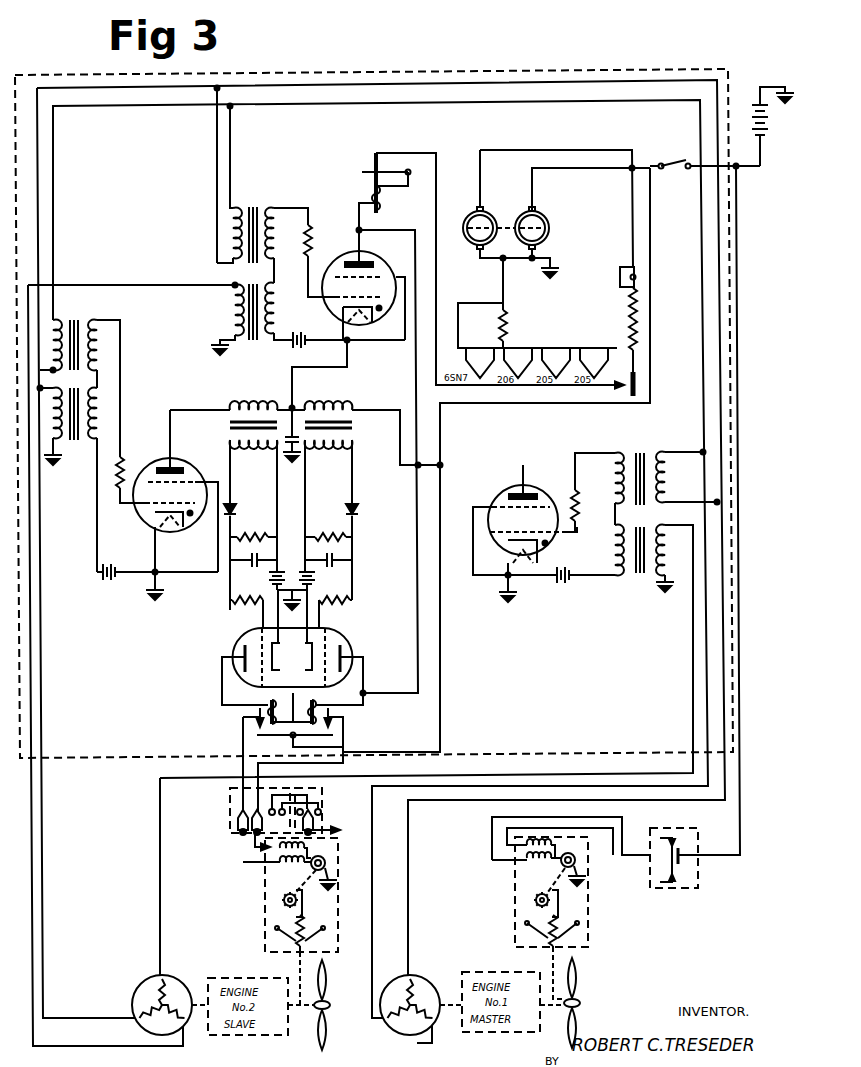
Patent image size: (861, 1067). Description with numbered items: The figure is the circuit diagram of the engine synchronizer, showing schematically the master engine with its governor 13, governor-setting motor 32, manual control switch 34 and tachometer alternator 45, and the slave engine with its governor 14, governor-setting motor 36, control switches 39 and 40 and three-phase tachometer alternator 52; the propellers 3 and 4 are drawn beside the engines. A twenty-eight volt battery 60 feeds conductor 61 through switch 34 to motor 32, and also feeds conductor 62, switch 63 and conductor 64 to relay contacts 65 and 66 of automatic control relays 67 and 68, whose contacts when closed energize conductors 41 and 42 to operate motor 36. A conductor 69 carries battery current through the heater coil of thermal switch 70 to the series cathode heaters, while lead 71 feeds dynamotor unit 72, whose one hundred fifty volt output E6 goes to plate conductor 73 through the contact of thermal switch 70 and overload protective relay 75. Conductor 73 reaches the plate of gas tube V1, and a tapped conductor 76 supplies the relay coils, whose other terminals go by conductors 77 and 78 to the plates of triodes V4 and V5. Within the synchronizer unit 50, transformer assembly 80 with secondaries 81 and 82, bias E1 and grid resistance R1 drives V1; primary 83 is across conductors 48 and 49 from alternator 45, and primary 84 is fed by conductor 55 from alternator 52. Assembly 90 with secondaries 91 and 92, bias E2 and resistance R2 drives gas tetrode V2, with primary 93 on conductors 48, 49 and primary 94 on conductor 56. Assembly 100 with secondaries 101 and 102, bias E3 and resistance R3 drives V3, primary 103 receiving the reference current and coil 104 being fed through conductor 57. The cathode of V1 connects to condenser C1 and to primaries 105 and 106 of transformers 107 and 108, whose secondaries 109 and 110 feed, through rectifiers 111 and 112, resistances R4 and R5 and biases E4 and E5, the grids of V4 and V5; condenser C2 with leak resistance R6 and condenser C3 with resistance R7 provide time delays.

The master engine propeller 3 is at (578, 969).
The slave engine propeller 4 is at (328, 971).
The governor 13 is at (598, 921).
The governor 14 is at (260, 920).
The governor-setting motor 32 is at (578, 857).
The manual control switch 34 is at (700, 880).
The governor-setting motor 36 is at (310, 868).
The control switch 39 is at (230, 820).
The control switch 40 is at (323, 803).
The conductor 41 is at (243, 776).
The conductor 42 is at (345, 765).
The tachometer alternator 45 is at (422, 980).
The conductor 48 is at (429, 108).
The conductor 49 is at (450, 86).
The synchronizer unit 50 is at (464, 64).
The tachometer alternator 52 is at (172, 978).
The conductor 55 is at (35, 916).
The conductor 56 is at (45, 945).
The conductor 57 is at (162, 912).
The battery 60 is at (768, 122).
The conductor 61 is at (741, 190).
The conductor 62 is at (736, 166).
The switch 63 is at (670, 160).
The conductor 64 is at (652, 202).
The relay contacts 65 is at (264, 735).
The relay contacts 66 is at (340, 735).
The automatic control relay 67 is at (250, 716).
The automatic control relay 68 is at (338, 716).
The conductor 69 is at (620, 270).
The thermal switch 70 is at (641, 300).
The lead 71 is at (578, 170).
The dynamotor unit 72 is at (515, 197).
The conductor 73 is at (358, 212).
The overload current protective relay 75 is at (370, 167).
The conductor 76 is at (407, 234).
The conductor 77 is at (220, 680).
The conductor 78 is at (366, 674).
The coupling transformer assembly 80 is at (275, 193).
The transformer secondary coil 81 is at (276, 232).
The transformer secondary coil 82 is at (282, 304).
The primary coil 83 is at (230, 233).
The primary coil 84 is at (233, 308).
The coupling transformer assembly 90 is at (89, 312).
The secondary coil 91 is at (96, 339).
The secondary coil 92 is at (96, 410).
The primary coil 93 is at (49, 246).
The primary coil 94 is at (58, 452).
The coupling transformer assembly 100 is at (562, 478).
The secondary coil 101 is at (612, 470).
The secondary coil 102 is at (612, 553).
The transformer primary coil 103 is at (668, 471).
The transformer coil 104 is at (660, 582).
The primary 105 is at (272, 401).
The primary 106 is at (340, 401).
The transformer 107 is at (265, 379).
The transformer 108 is at (325, 379).
The secondary winding 109 is at (254, 487).
The secondary winding 110 is at (329, 506).
The rectifier 111 is at (235, 509).
The rectifier 112 is at (357, 509).
The gaseous discharge tube V1 is at (350, 256).
The gas tetrode V2 is at (207, 468).
The gas tetrode V3 is at (510, 490).
The triode vacuum tube V4 is at (232, 648).
The triode vacuum tube V5 is at (350, 650).
The grid resistance R1 is at (306, 259).
The grid resistance R2 is at (124, 460).
The grid resistance R3 is at (579, 517).
The grid resistance R4 is at (246, 612).
The grid resistance R5 is at (341, 612).
The shunt leak resistance R6 is at (253, 530).
The shunt leak resistance R7 is at (328, 530).
The fixed condenser C1 is at (290, 431).
The fixed condenser C2 is at (250, 562).
The condenser C3 is at (333, 562).
The bias voltage E1 is at (306, 336).
The bias voltage E2 is at (110, 568).
The bias voltage E3 is at (571, 579).
The grid bias potential E4 is at (270, 580).
The grid bias potential E5 is at (312, 581).
The output voltage E6 is at (462, 174).